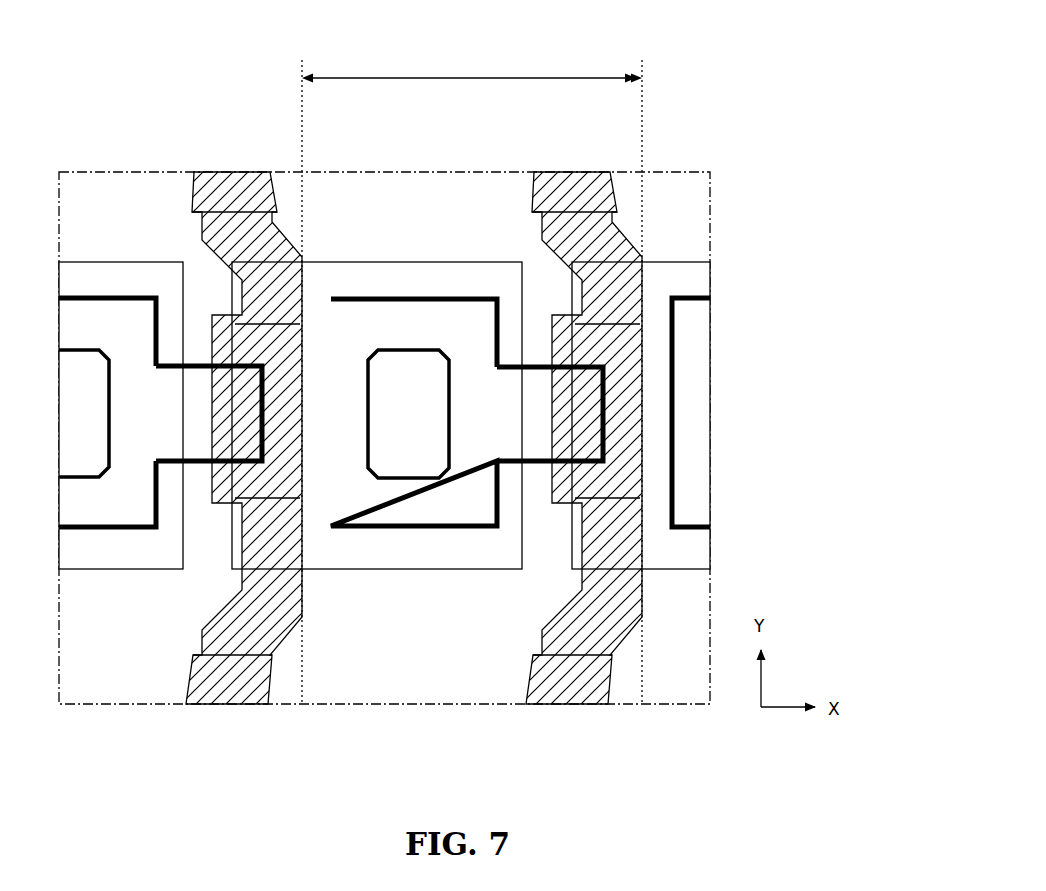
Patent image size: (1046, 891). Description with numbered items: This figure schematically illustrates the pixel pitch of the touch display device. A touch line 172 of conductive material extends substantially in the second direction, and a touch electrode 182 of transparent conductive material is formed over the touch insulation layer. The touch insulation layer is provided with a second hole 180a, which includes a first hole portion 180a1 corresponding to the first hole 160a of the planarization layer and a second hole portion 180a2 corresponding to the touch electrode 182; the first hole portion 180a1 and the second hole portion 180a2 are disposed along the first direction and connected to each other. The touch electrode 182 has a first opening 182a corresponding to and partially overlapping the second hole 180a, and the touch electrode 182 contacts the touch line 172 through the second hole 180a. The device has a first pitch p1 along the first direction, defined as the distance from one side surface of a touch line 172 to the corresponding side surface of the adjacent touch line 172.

The touch electrode 182 is at (133, 198).
The first opening 182a is at (367, 255).
The first hole 160a is at (443, 340).
The first hole portion 180a1 is at (410, 538).
The second hole portion 180a2 is at (527, 472).
The second hole 180a is at (384, 551).
The touch line 172 is at (642, 528).
The first pitch p1 is at (472, 377).